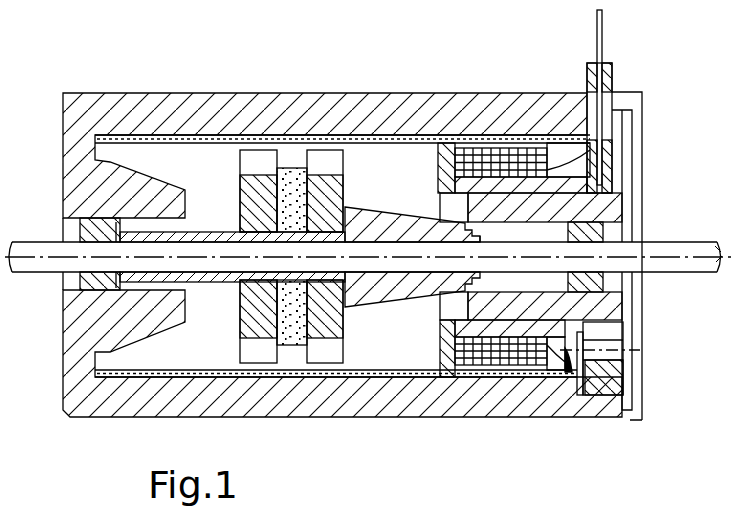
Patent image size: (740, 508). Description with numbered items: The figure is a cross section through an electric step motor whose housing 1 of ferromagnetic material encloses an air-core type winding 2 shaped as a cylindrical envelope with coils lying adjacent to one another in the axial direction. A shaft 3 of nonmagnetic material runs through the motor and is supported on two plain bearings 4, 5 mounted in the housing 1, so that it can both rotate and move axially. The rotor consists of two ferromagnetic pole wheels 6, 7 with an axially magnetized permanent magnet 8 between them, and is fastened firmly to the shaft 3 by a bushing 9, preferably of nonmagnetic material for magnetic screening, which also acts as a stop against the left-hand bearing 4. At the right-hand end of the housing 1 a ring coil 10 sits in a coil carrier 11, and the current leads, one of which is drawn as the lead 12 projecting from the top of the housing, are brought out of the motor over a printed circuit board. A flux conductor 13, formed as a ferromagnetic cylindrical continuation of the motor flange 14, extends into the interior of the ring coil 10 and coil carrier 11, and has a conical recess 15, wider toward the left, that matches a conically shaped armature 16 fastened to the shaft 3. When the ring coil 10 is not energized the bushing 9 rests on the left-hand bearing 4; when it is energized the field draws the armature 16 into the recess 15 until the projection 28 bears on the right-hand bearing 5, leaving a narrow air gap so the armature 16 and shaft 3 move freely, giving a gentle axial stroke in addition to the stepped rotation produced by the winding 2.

The housing 1 is at (405, 112).
The air-core type winding 2 is at (437, 130).
The shaft 3 is at (671, 262).
The plain bearing 4 is at (100, 233).
The plain bearing 5 is at (590, 230).
The pole wheel 6 is at (323, 193).
The pole wheel 7 is at (252, 195).
The permanent magnet 8 is at (297, 190).
The bushing 9 is at (227, 237).
The ring coil 10 is at (505, 347).
The coil carrier 11 is at (448, 345).
The connecting pin 12 is at (605, 30).
The flux conductor 13 is at (535, 200).
The motor flange 14 is at (610, 380).
The conical recess 15 is at (520, 285).
The conical armature 16 is at (393, 291).
The projection 28 is at (480, 234).